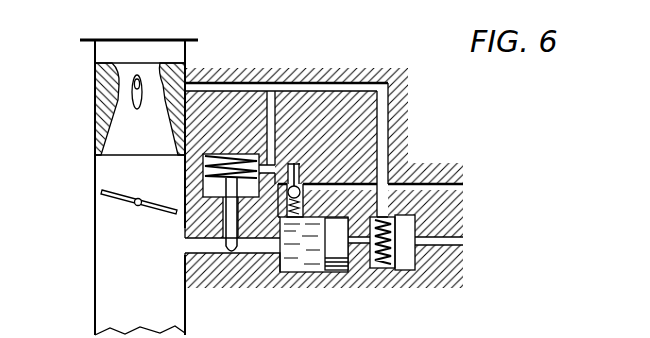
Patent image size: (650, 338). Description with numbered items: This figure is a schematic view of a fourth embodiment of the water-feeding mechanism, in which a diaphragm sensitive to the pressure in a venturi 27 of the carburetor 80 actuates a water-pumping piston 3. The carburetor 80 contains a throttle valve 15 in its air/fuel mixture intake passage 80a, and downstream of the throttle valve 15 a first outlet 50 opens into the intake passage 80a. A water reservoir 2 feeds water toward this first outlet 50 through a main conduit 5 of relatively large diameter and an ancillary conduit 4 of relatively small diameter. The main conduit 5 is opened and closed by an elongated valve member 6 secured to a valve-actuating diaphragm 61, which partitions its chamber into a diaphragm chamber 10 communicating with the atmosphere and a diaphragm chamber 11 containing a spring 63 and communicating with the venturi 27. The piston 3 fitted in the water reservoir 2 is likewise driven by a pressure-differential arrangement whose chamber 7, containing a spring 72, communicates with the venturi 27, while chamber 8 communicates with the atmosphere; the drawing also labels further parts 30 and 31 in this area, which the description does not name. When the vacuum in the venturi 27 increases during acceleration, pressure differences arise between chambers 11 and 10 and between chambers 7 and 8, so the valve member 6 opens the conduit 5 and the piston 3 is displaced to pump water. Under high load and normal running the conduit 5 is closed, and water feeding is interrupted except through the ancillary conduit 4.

The water reservoir 2 is at (293, 262).
The piston 3 is at (330, 272).
The ancillary conduit 4 is at (191, 272).
The main conduit 5 is at (192, 234).
The valve member 6 is at (200, 262).
The pressure-differential chamber 7 is at (392, 207).
The pressure-differential chamber 8 is at (407, 227).
The diaphragm chamber 10 is at (185, 190).
The diaphragm chamber 11 is at (204, 165).
The throttle valve 15 is at (112, 193).
The venturi 27 is at (103, 93).
The ball check valve 30 is at (383, 272).
The plug 31 is at (410, 262).
The first outlet 50 is at (187, 245).
The valve-actuating diaphragm 61 is at (240, 215).
The spring 63 is at (217, 153).
The spring 72 is at (392, 277).
The carburetor 80 is at (96, 236).
The air/fuel mixture intake passage 80a is at (115, 292).